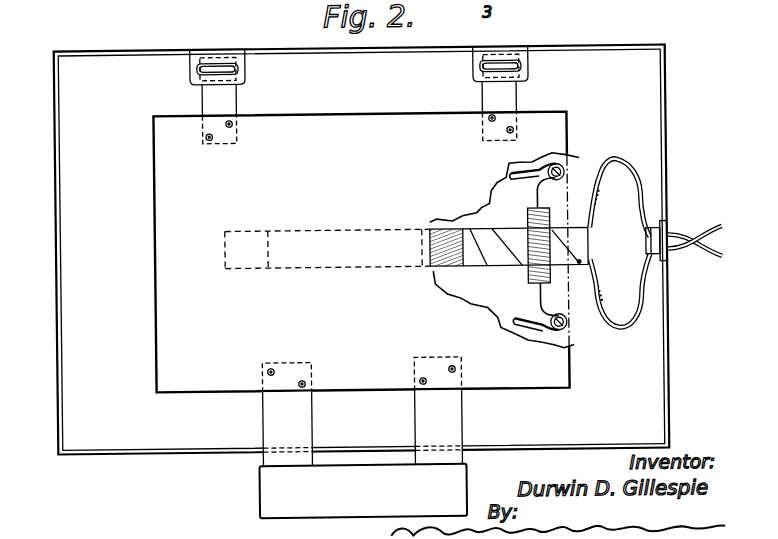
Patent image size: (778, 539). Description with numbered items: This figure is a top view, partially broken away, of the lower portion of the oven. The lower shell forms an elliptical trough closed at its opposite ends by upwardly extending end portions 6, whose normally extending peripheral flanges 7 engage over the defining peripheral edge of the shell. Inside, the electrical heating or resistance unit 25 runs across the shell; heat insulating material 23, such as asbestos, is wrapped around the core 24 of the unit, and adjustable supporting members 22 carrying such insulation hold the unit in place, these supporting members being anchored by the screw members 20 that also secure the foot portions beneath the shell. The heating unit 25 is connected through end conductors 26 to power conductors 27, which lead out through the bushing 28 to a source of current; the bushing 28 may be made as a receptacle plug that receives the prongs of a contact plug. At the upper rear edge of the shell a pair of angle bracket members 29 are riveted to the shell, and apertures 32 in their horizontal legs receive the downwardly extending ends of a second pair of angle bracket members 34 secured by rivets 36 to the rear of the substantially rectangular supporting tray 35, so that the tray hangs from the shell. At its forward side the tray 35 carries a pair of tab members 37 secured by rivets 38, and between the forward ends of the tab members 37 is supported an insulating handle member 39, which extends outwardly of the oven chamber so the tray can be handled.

The end portion 6 is at (57, 145).
The peripheral flange 7 is at (76, 49).
The screw member 20 is at (566, 169).
The supporting member 22 is at (540, 299).
The heat insulating material 23 is at (520, 268).
The core 24 is at (517, 230).
The electrical heating unit 25 is at (343, 230).
The end conductor 26 is at (597, 222).
The power conductor 27 is at (643, 189).
The bushing 28 is at (670, 232).
The angle bracket member 29 is at (247, 58).
The aperture 32 is at (199, 70).
The angle bracket member 34 is at (242, 96).
The supporting tray 35 is at (155, 220).
The rivet 36 is at (230, 126).
The tab member 37 is at (261, 415).
The rivet 38 is at (299, 380).
The insulating handle member 39 is at (257, 490).